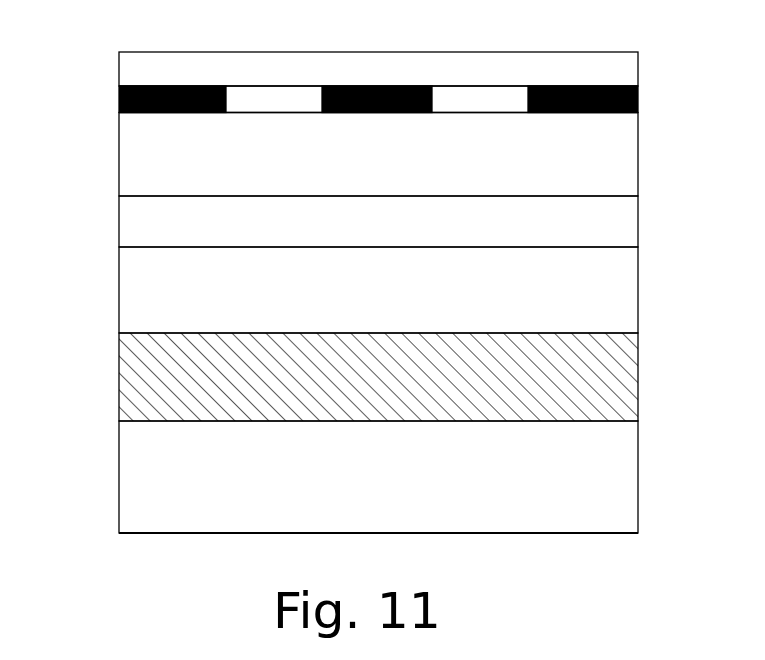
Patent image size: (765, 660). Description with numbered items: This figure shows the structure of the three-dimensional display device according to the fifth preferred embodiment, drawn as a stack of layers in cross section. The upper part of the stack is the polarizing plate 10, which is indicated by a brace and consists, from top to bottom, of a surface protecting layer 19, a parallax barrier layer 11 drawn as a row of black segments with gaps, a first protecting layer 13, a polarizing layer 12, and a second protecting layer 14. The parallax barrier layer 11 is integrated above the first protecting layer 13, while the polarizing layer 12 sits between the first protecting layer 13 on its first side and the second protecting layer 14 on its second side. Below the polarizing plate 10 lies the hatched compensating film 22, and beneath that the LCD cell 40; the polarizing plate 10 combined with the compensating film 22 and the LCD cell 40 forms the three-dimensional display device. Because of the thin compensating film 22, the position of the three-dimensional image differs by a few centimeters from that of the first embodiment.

The polarizing plate 10 is at (387, 188).
The surface protecting layer 19 is at (132, 68).
The parallax barrier layer 11 is at (120, 98).
The first protecting layer 13 is at (132, 166).
The polarizing layer 12 is at (132, 223).
The second protecting layer 14 is at (132, 298).
The compensating film 22 is at (132, 385).
The LCD cell 40 is at (132, 487).